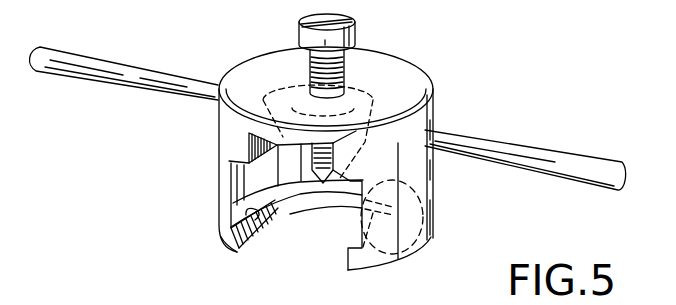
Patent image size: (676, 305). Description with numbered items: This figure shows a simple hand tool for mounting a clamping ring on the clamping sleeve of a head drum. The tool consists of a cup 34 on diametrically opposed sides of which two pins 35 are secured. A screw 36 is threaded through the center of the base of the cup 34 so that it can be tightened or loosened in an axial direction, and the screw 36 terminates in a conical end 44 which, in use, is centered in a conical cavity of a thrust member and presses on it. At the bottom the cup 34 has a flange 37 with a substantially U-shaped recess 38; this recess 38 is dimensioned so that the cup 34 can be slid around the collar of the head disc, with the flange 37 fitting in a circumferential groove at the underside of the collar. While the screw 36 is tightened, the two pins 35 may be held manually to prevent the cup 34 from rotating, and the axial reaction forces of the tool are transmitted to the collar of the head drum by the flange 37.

The cup 34 is at (415, 84).
The pins 35 is at (102, 68).
The screw 36 is at (357, 35).
The flange 37 is at (262, 235).
The U-shaped recess 38 is at (340, 237).
The conical end 44 is at (322, 177).